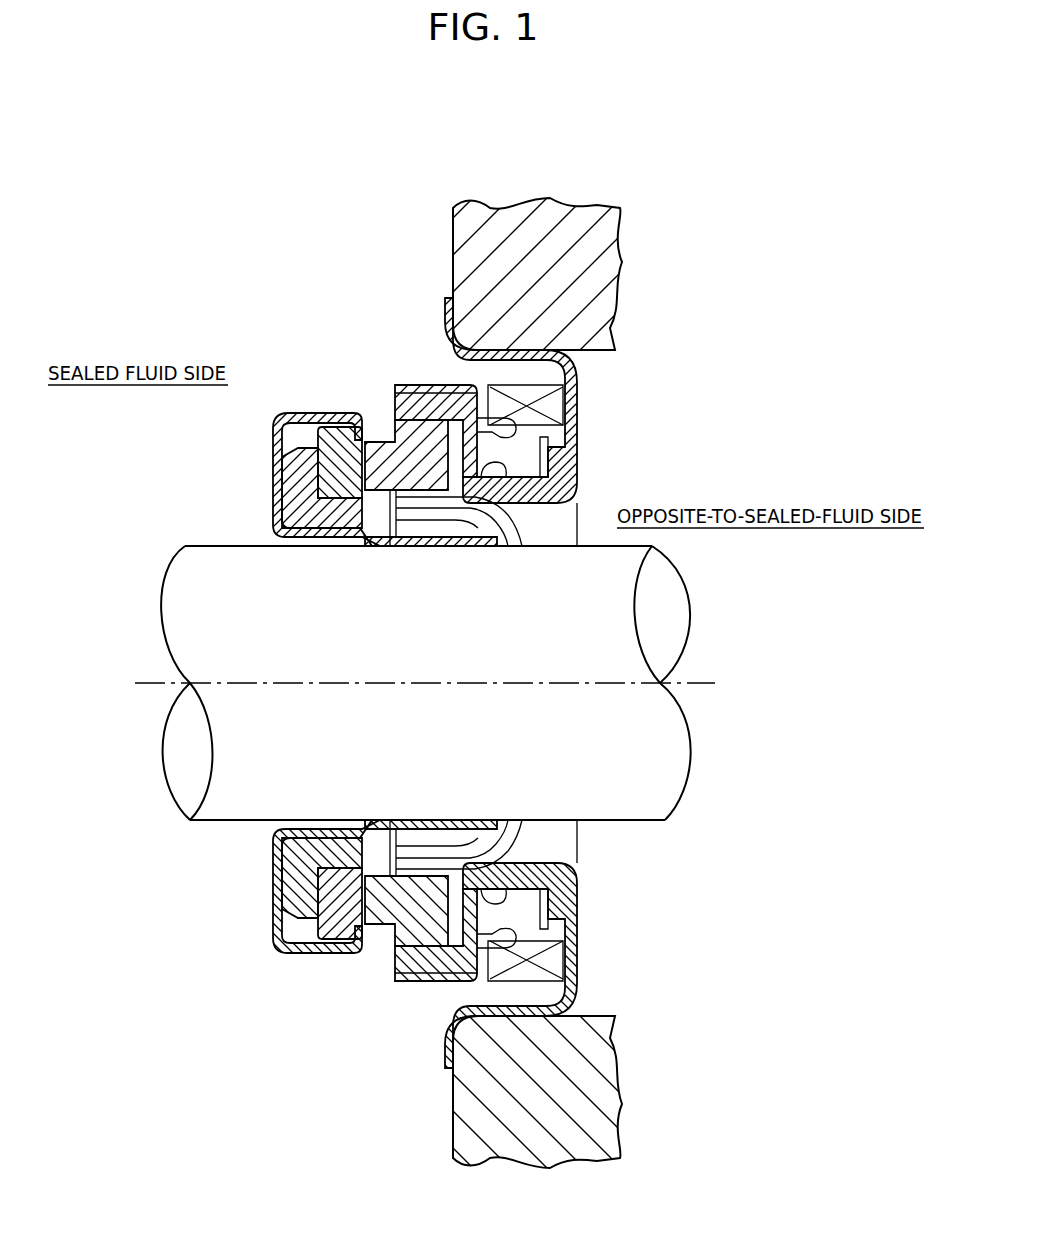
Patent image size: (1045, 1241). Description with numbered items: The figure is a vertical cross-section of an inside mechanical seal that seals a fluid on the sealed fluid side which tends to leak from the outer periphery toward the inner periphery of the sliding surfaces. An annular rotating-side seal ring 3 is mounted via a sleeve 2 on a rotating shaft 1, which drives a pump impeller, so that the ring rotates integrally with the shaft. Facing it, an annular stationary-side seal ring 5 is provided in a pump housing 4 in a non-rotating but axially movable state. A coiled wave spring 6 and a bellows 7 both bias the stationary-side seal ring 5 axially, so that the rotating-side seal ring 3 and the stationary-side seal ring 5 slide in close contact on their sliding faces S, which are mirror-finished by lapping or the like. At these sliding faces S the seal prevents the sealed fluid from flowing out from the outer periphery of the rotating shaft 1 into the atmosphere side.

The rotating shaft 1 is at (322, 649).
The sleeve 2 is at (274, 480).
The rotating-side seal ring 3 is at (335, 445).
The pump housing 4 is at (527, 222).
The stationary-side seal ring 5 is at (400, 445).
The coiled wave spring 6 is at (560, 412).
The bellows 7 is at (450, 407).
The sliding faces S is at (376, 486).